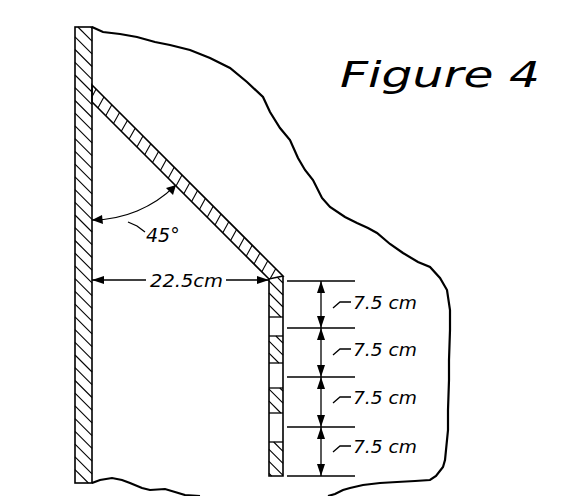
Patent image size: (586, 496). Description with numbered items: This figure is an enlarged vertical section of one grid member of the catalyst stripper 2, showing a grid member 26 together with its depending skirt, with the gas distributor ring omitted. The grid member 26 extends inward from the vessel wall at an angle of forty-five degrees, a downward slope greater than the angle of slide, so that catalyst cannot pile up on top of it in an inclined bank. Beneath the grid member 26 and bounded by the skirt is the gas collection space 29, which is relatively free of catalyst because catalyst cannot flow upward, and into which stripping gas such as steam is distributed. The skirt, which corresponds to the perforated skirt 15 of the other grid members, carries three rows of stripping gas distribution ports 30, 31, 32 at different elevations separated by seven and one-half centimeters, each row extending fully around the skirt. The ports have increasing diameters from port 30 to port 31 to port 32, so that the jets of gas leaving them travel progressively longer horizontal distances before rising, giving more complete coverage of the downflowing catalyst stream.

The stripper 2 is at (70, 345).
The grid member 26 is at (194, 188).
The gas collection space 29 is at (166, 370).
The stripping gas distribution port 30 is at (268, 328).
The stripping gas distribution port 31 is at (268, 375).
The stripping gas distribution port 32 is at (268, 427).
The skirt 15 is at (269, 462).